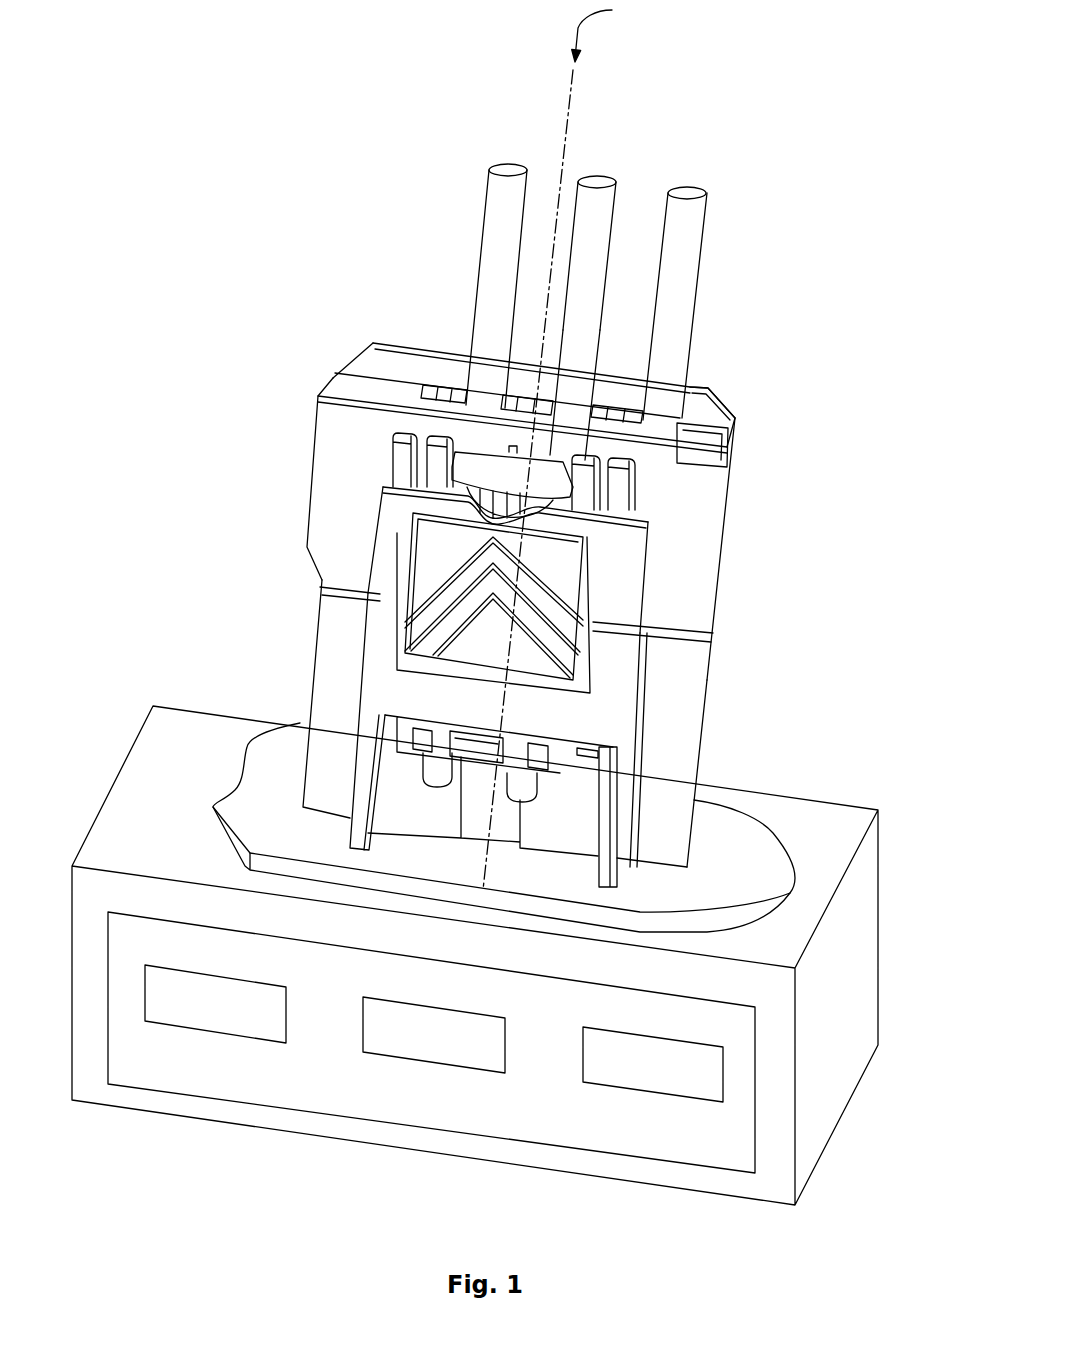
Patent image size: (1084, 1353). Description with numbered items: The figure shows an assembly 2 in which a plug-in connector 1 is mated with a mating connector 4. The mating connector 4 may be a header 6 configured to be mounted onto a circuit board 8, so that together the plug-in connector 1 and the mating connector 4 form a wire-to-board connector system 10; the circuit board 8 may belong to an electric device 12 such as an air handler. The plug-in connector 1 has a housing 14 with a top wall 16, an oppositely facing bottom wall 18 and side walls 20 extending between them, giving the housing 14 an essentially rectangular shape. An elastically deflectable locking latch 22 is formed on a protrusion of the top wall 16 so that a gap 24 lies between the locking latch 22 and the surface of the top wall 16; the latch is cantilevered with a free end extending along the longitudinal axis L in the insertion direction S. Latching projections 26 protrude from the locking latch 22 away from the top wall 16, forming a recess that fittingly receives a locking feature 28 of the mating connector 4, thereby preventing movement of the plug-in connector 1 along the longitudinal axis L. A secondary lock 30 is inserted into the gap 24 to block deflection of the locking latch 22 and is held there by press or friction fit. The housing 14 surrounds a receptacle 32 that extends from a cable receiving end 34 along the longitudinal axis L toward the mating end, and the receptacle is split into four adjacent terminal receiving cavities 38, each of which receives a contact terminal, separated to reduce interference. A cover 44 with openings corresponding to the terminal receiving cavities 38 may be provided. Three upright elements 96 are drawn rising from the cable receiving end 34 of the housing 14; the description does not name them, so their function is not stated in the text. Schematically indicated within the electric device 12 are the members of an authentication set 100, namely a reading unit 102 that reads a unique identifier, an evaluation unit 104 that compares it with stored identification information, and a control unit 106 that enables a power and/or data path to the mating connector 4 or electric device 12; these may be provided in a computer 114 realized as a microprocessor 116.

The plug-in connector 1 is at (752, 455).
The assembly 2 is at (215, 178).
The mating connector 4 is at (710, 745).
The header 6 is at (512, 733).
The circuit board 8 is at (773, 847).
The wire-to-board connector system 10 is at (230, 130).
The electric device 12 is at (780, 982).
The housing 14 is at (712, 502).
The top wall 16 is at (328, 458).
The bottom wall 18 is at (417, 343).
The side walls 20 is at (298, 542).
The locking latch 22 is at (380, 637).
The gap 24 is at (570, 468).
The latching projections 26 is at (395, 725).
The locking feature 28 is at (557, 727).
The secondary lock 30 is at (545, 470).
The receptacle 32 is at (462, 342).
The cable receiving end 34 is at (745, 422).
The terminal receiving cavities 38 is at (393, 347).
The cover 44 is at (360, 357).
The contact pins 96 is at (608, 193).
The authentication set 100 is at (188, 220).
The reading unit 102 is at (238, 1015).
The evaluation unit 104 is at (459, 1047).
The control unit 106 is at (683, 1080).
The computer 114 is at (447, 1105).
The microprocessor 116 is at (431, 1042).
The insertion direction S is at (603, 31).
The longitudinal axis L is at (563, 152).